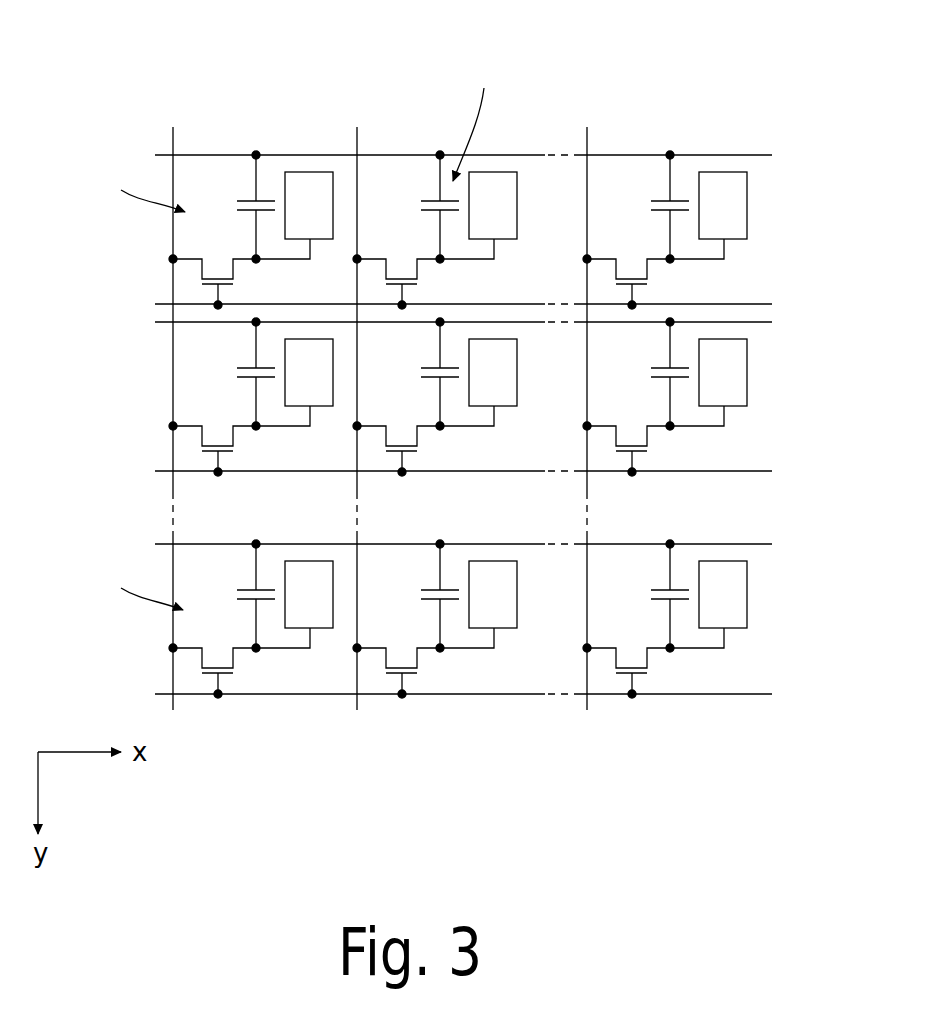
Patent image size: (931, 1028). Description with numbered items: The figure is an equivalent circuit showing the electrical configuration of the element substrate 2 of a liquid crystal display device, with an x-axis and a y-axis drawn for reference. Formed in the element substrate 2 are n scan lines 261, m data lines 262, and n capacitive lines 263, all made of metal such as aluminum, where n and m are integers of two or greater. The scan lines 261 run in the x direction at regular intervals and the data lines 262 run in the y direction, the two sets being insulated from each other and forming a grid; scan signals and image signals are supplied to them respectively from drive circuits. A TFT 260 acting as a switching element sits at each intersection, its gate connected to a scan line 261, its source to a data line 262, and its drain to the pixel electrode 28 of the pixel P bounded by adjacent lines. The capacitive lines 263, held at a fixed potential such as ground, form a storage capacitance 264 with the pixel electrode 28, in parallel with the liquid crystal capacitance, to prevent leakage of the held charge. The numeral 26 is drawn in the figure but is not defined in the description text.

The element substrate 2 is at (750, 79).
The pixel array area 26 is at (120, 99).
The pixel electrode 28 is at (307, 172).
The TFT 260 is at (250, 284).
The scan line 261 is at (165, 303).
The data line 262 is at (175, 147).
The capacitive line 263 is at (160, 155).
The storage capacitance 264 is at (226, 204).